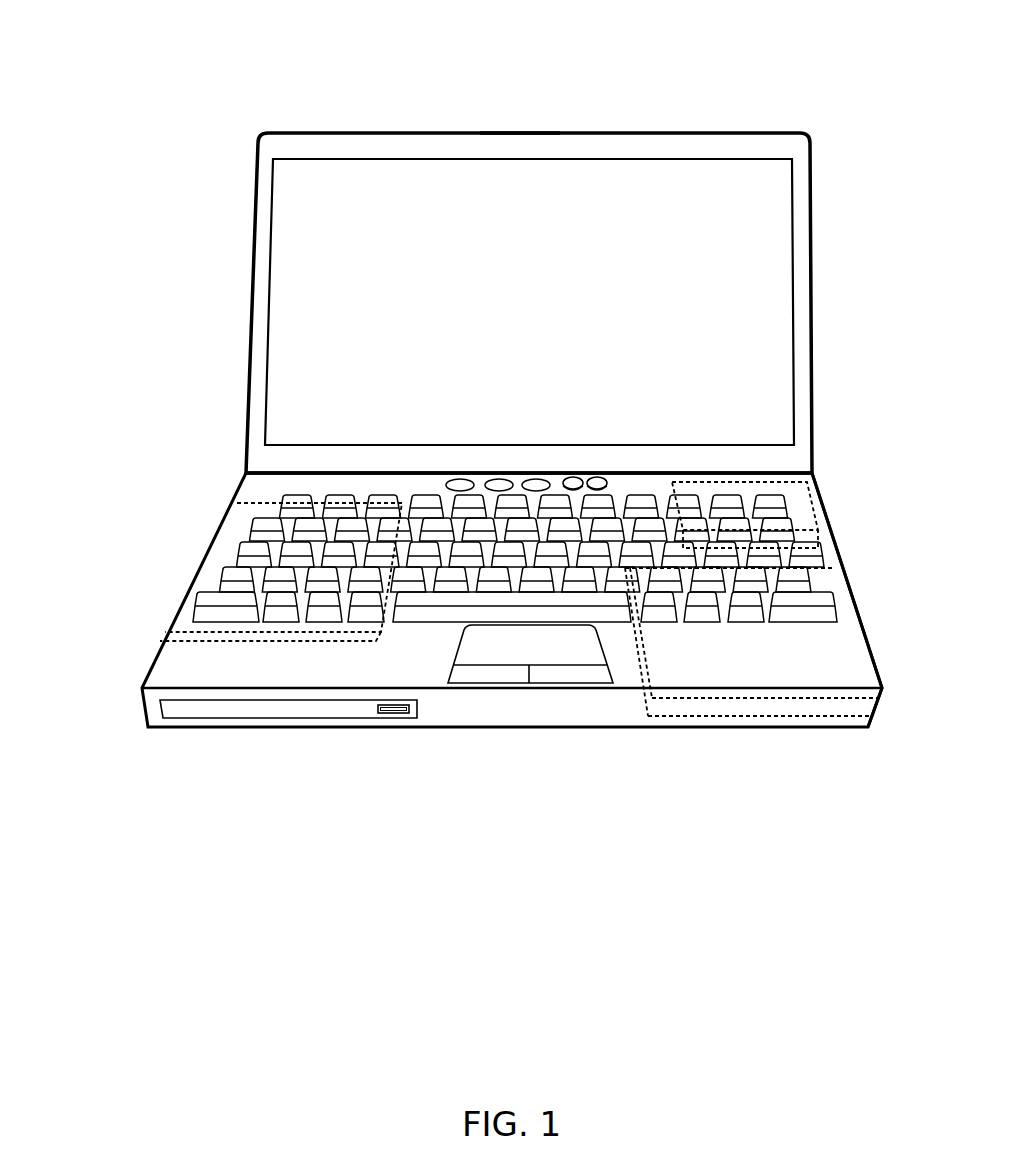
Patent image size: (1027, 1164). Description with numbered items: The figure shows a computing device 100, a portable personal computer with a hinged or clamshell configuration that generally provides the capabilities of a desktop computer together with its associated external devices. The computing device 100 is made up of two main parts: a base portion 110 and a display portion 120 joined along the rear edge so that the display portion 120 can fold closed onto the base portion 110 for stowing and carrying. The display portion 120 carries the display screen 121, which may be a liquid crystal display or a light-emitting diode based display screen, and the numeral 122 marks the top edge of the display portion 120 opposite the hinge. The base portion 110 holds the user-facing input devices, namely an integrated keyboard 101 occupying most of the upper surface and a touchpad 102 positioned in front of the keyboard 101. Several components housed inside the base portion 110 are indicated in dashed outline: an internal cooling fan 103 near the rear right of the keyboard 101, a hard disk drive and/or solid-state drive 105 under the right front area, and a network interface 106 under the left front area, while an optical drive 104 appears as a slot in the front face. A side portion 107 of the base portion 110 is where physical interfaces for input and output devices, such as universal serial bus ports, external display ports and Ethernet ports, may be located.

The computing device 100 is at (214, 60).
The integrated keyboard 101 is at (845, 557).
The touchpad 102 is at (455, 641).
The internal cooling fan 103 is at (812, 512).
The optical drive 104 is at (417, 707).
The hard disk drive and/or solid-state drive 105 is at (647, 698).
The network interface 106 is at (236, 642).
The side portion 107 is at (905, 659).
The base portion 110 is at (232, 467).
The display portion 120 is at (441, 281).
The display screen 121 is at (553, 318).
The top edge of lid 122 is at (516, 133).